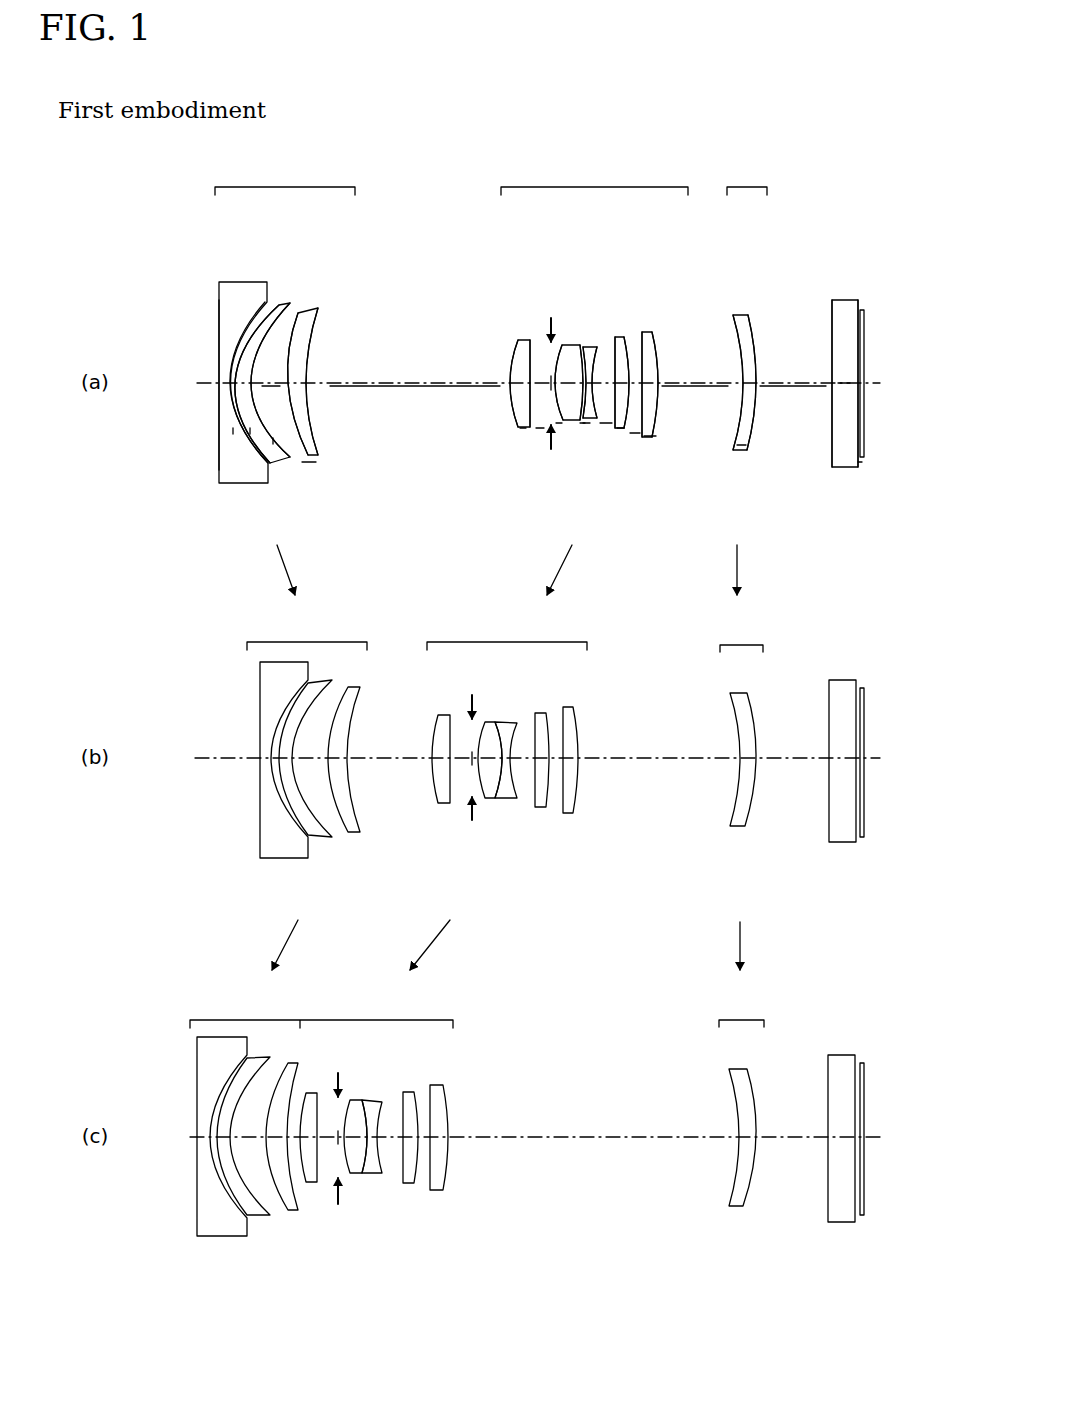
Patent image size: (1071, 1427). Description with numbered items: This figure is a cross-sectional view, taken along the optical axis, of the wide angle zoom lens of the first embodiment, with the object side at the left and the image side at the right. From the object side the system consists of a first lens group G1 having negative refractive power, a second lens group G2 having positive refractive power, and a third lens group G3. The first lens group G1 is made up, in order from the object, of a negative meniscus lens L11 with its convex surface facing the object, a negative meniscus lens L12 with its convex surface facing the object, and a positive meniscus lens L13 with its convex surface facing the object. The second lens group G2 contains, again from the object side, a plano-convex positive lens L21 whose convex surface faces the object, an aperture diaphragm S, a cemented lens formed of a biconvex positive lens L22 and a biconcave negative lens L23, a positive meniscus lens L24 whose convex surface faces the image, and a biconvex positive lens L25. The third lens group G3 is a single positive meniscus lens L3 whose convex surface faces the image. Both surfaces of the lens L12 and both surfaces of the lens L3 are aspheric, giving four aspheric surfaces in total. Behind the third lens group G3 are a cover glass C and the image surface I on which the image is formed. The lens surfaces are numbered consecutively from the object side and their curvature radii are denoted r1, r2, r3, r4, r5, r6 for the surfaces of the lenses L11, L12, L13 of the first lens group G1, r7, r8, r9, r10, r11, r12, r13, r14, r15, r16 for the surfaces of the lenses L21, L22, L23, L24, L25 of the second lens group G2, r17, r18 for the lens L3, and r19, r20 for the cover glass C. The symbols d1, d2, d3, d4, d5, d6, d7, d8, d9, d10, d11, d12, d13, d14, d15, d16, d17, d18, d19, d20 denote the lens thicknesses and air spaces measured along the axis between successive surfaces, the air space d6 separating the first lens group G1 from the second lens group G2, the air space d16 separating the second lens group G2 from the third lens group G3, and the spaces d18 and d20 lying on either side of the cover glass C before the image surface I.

The first lens group G1 is at (285, 326).
The second lens group G2 is at (594, 303).
The third lens group G3 is at (747, 309).
The negative meniscus lens L11 is at (233, 290).
The negative meniscus lens L12 is at (287, 300).
The positive meniscus lens L13 is at (314, 312).
The plano-convex positive lens L21 is at (521, 340).
The biconvex positive lens L22 is at (565, 345).
The biconcave negative lens L23 is at (588, 345).
The positive meniscus lens L24 is at (621, 335).
The biconvex positive lens L25 is at (651, 330).
The positive meniscus lens L3 is at (743, 315).
The aperture diaphragm S is at (551, 455).
The cover glass C is at (848, 460).
The image surface I is at (866, 420).
The curvature radius of lens surface r1 is at (219, 308).
The curvature radius of lens surface r2 is at (250, 320).
The curvature radius of lens surface r3 is at (275, 320).
The curvature radius of lens surface r4 is at (285, 315).
The curvature radius of lens surface r5 is at (296, 330).
The curvature radius of lens surface r6 is at (313, 330).
The curvature radius of lens surface r7 is at (512, 345).
The curvature radius of lens surface r8 is at (529, 345).
The curvature radius of lens surface r9 is at (557, 350).
The curvature radius of lens surface r10 is at (580, 350).
The curvature radius of lens surface r11 is at (586, 350).
The curvature radius of lens surface r12 is at (594, 350).
The curvature radius of lens surface r13 is at (616, 340).
The curvature radius of lens surface r14 is at (628, 340).
The curvature radius of lens surface r15 is at (644, 335).
The curvature radius of lens surface r16 is at (657, 340).
The curvature radius of lens surface r17 is at (736, 335).
The curvature radius of lens surface r18 is at (752, 330).
The curvature radius of lens surface r19 is at (832, 318).
The curvature radius of lens surface r20 is at (860, 315).
The lens thickness d1 is at (233, 430).
The air space d2 is at (250, 430).
The lens thickness d3 is at (273, 440).
The air space d4 is at (270, 396).
The lens thickness d5 is at (309, 477).
The air space d6 is at (415, 396).
The lens thickness d7 is at (522, 430).
The air space d8 is at (540, 430).
The lens thickness d9 is at (558, 425).
The air space d10 is at (582, 425).
The lens thickness d11 is at (585, 425).
The air space d12 is at (605, 425).
The lens thickness d13 is at (620, 430).
The air space d14 is at (636, 435).
The lens thickness d15 is at (651, 438).
The air space d16 is at (695, 396).
The lens thickness d17 is at (740, 445).
The air space d18 is at (793, 396).
The lens thickness d19 is at (838, 383).
The air space d20 is at (863, 462).